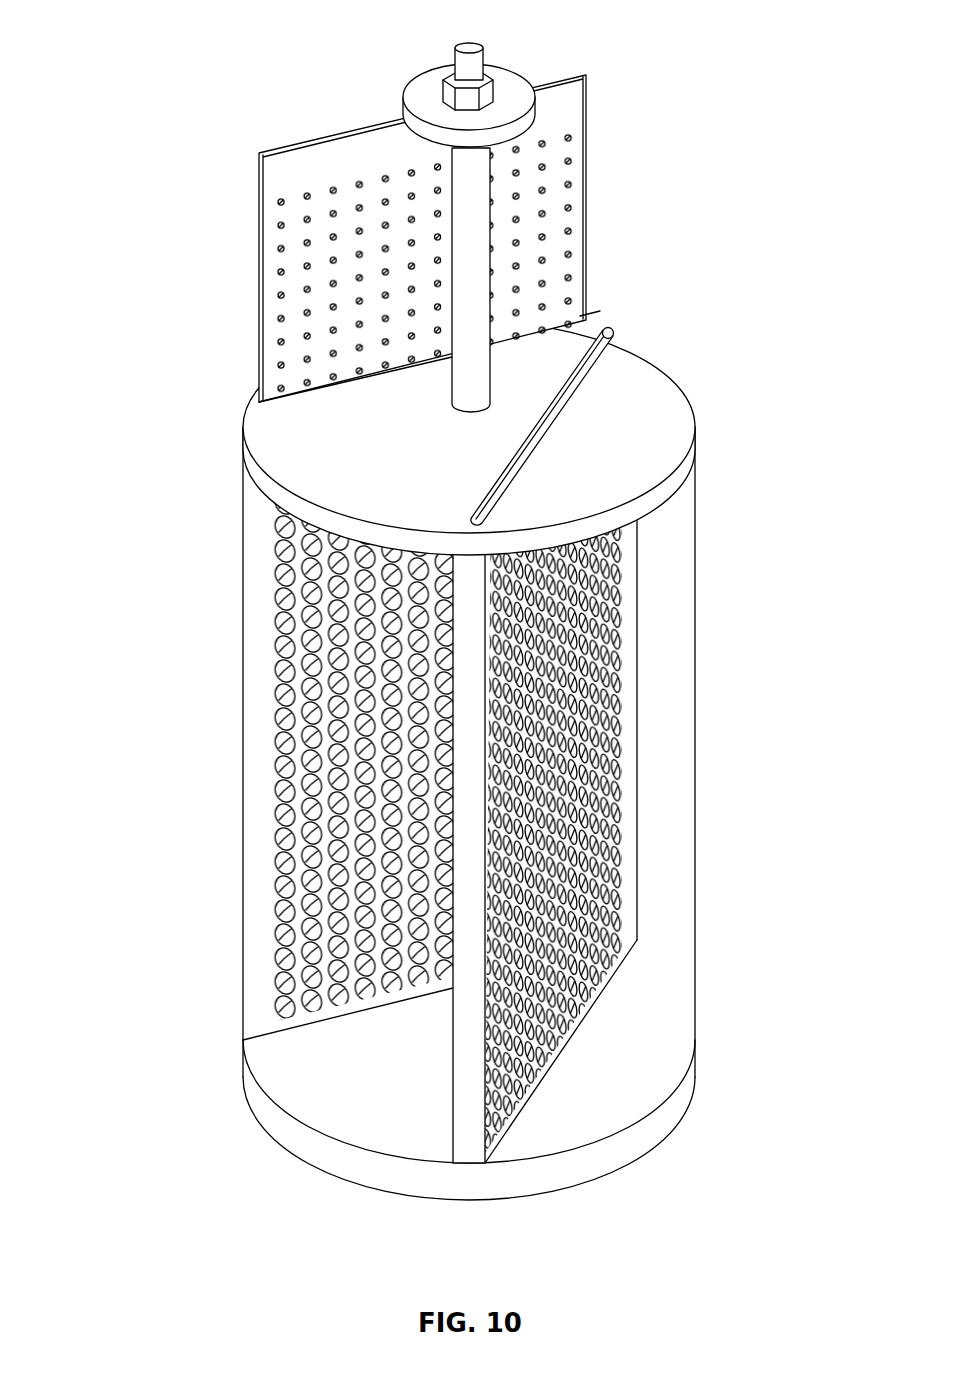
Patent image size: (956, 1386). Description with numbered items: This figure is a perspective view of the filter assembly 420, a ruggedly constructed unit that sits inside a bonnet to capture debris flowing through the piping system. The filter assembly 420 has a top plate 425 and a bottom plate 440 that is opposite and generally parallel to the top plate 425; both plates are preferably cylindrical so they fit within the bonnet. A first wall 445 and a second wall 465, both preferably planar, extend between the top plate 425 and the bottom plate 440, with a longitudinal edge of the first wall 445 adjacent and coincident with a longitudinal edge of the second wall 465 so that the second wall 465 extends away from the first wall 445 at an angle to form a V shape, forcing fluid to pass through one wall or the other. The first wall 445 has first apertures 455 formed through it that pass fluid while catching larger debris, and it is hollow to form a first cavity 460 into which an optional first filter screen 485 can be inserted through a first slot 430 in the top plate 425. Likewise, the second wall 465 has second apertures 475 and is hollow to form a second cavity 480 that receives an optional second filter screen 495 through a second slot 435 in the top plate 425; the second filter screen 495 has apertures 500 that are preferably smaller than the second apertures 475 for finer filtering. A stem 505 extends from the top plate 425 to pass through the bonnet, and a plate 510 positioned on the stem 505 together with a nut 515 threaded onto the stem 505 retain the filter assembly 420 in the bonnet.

The filter assembly 420 is at (182, 114).
The top plate 425 is at (295, 443).
The first slot 430 is at (583, 381).
The second slot 435 is at (260, 400).
The bottom plate 440 is at (652, 1070).
The first wall 445 is at (634, 774).
The first apertures 455 is at (605, 689).
The first cavity 460 is at (494, 479).
The second wall 465 is at (262, 636).
The second apertures 475 is at (305, 717).
The second cavity 480 is at (593, 310).
The first filter screen 485 is at (602, 363).
The second filter screen 495 is at (563, 103).
The apertures 500 is at (540, 163).
The stem 505 is at (470, 225).
The plate 510 is at (422, 96).
The nut 515 is at (452, 92).